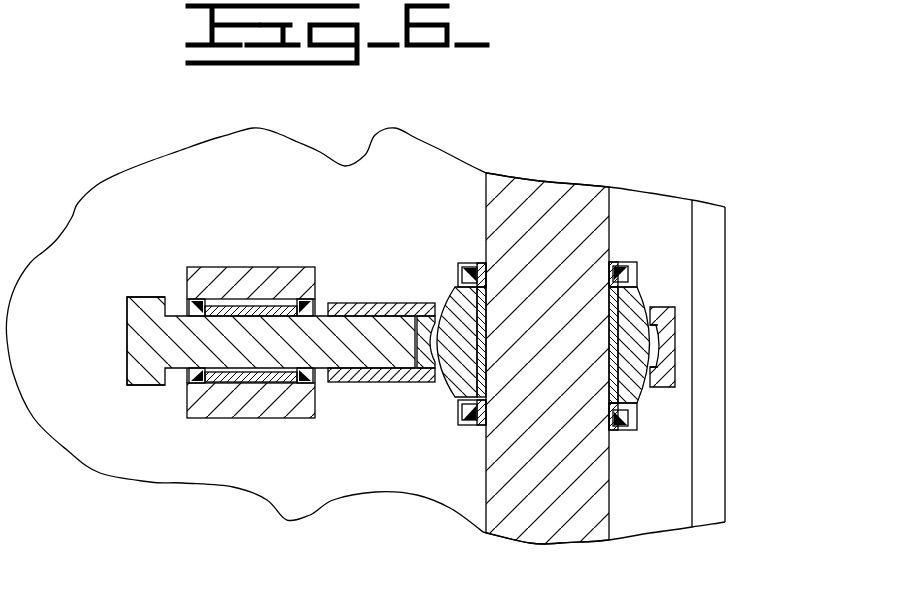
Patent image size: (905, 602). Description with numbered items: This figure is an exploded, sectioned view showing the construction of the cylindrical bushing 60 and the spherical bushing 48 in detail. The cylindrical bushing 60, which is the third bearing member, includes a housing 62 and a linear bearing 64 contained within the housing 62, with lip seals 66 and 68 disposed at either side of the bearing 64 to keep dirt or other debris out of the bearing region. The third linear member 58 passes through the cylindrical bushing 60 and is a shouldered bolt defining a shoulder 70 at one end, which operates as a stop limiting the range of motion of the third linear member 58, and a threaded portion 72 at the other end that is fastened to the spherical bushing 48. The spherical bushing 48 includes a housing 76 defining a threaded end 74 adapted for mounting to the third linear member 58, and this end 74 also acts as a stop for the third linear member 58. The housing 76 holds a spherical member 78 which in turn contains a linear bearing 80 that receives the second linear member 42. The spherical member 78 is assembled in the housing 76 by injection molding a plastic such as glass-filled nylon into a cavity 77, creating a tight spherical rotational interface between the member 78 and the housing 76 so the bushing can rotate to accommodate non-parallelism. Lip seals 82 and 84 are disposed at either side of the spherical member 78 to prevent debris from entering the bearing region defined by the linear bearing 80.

The second linear member 42 is at (583, 247).
The spherical bushing 48 is at (673, 338).
The third cylindrical linear member 58 is at (127, 295).
The cylindrical bushing 60 is at (250, 267).
The housing 62 is at (312, 418).
The linear bearing 64 is at (228, 382).
The lip seal 66 is at (187, 390).
The lip seal 68 is at (317, 387).
The shoulder 70 is at (128, 383).
The threaded portion 72 is at (360, 318).
The threaded end 74 is at (332, 302).
The housing 76 is at (675, 385).
The cavity 77 is at (652, 305).
The spherical member 78 is at (637, 423).
The linear bearing 80 is at (460, 393).
The lip seal 82 is at (472, 262).
The lip seal 84 is at (467, 430).